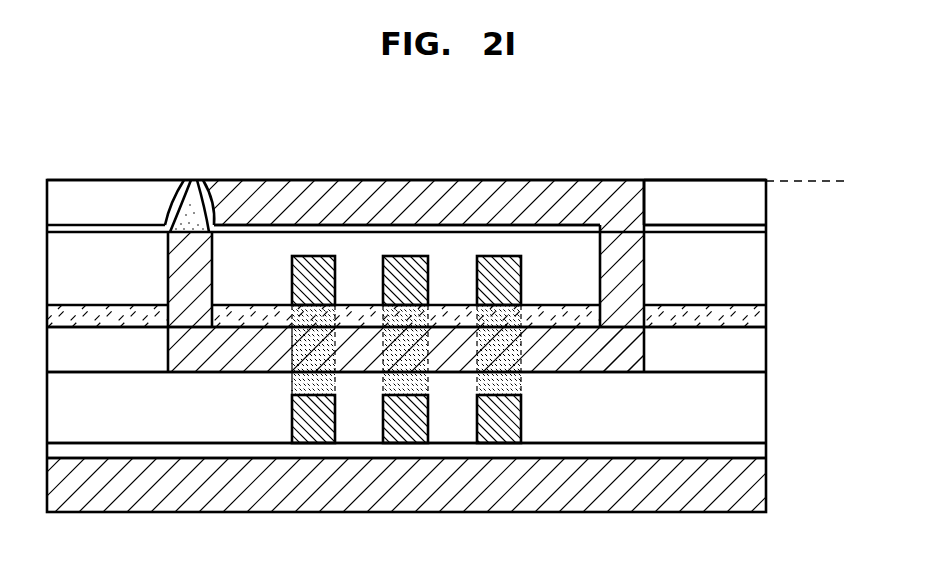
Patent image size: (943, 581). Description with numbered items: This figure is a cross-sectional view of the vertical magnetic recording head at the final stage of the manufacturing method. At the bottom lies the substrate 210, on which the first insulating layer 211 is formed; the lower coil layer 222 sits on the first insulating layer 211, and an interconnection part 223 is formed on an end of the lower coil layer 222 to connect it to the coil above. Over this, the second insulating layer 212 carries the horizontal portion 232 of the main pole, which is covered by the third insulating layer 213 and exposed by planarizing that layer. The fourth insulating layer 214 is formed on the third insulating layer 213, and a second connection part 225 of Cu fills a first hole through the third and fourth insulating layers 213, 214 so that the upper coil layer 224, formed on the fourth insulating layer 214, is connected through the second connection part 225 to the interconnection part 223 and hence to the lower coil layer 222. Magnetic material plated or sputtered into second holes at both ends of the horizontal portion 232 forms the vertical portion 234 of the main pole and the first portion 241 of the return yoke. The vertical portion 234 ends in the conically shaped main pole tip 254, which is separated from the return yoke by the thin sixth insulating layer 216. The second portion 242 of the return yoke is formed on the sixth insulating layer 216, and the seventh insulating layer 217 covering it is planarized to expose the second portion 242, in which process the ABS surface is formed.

The substrate 210 is at (762, 492).
The first insulating layer 211 is at (760, 453).
The second insulating layer 212 is at (762, 410).
The third insulating layer 213 is at (753, 353).
The fourth insulating layer 214 is at (758, 317).
The sixth insulating layer 216 is at (765, 231).
The seventh insulating layer 217 is at (718, 190).
The lower coil layer 222 is at (313, 437).
The interconnection part 223 is at (292, 390).
The upper coil layer 224 is at (409, 256).
The second connection part 225 is at (338, 325).
The horizontal portion of the main pole 232 is at (570, 357).
The vertical portion of the main pole 234 is at (178, 268).
The first portion of the return yoke 241 is at (630, 273).
The second portion of the return yoke 242 is at (541, 193).
The main pole tip 254 is at (178, 220).
The ABS surface ABS is at (804, 182).